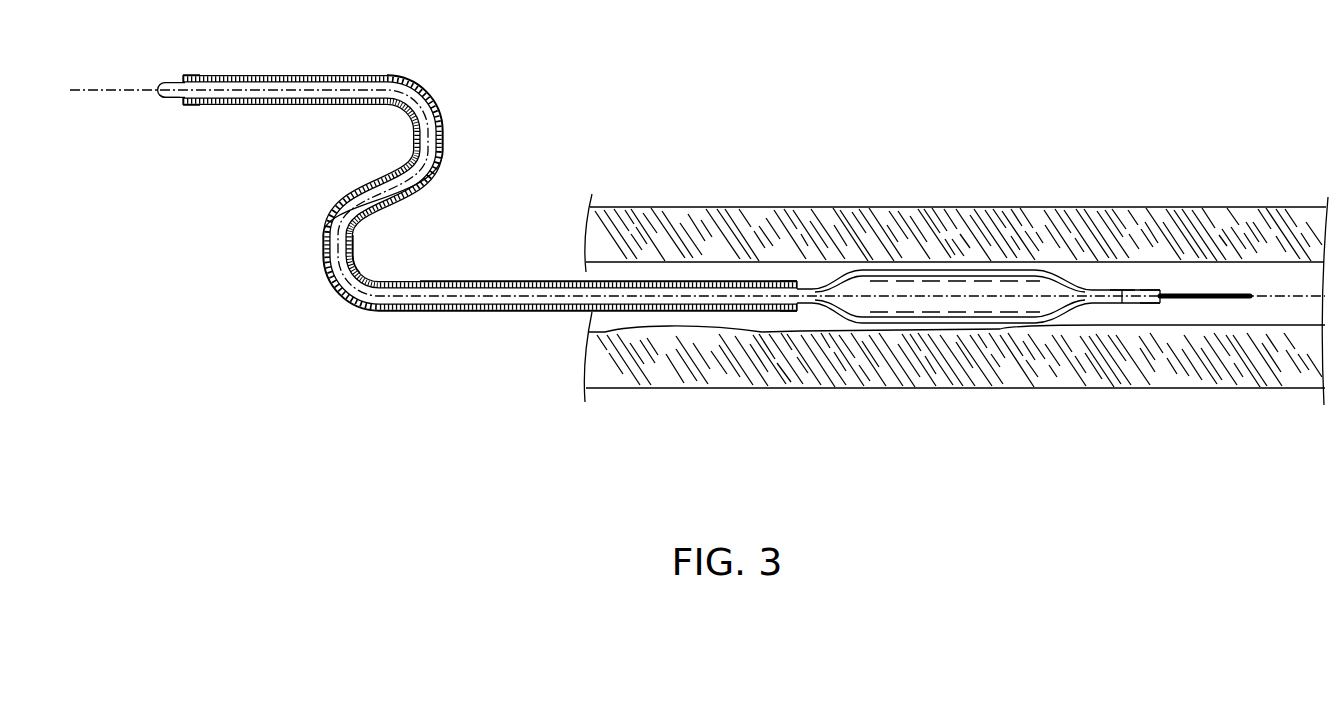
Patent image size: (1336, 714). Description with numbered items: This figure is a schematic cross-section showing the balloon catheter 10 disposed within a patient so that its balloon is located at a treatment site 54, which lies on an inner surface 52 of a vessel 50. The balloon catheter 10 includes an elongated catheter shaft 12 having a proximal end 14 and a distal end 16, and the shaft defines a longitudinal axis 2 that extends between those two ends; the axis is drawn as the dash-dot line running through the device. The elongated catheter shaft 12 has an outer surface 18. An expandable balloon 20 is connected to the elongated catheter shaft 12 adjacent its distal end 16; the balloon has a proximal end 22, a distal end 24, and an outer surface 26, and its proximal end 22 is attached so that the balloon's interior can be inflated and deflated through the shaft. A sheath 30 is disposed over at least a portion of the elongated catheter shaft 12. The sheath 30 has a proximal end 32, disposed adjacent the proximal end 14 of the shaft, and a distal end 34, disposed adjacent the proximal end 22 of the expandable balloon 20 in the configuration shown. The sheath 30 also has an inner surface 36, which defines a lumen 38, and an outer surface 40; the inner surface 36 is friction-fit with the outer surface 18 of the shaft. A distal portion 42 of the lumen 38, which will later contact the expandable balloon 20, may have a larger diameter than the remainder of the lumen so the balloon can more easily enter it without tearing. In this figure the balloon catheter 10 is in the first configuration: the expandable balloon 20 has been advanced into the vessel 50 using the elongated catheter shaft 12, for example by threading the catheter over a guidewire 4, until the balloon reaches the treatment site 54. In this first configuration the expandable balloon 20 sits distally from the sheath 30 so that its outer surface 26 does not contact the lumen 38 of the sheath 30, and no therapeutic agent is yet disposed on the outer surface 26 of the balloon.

The longitudinal axis 2 is at (350, 88).
The guidewire 4 is at (1217, 298).
The balloon catheter 10 is at (806, 88).
The elongated catheter shaft 12 is at (282, 82).
The proximal end 14 is at (155, 88).
The distal end 16 is at (1162, 290).
The outer surface 18 is at (163, 100).
The expandable balloon 20 is at (980, 262).
The proximal end 22 is at (803, 289).
The distal end 24 is at (1122, 300).
The outer surface 26 is at (920, 279).
The sheath 30 is at (341, 296).
The proximal end 32 is at (187, 75).
The distal end 34 is at (794, 280).
The inner surface 36 is at (328, 261).
The lumen 38 is at (397, 303).
The outer surface 40 is at (354, 255).
The distal portion 42 is at (481, 280).
The vessel 50 is at (1052, 260).
The inner surface 52 is at (745, 330).
The treatment site 54 is at (915, 400).